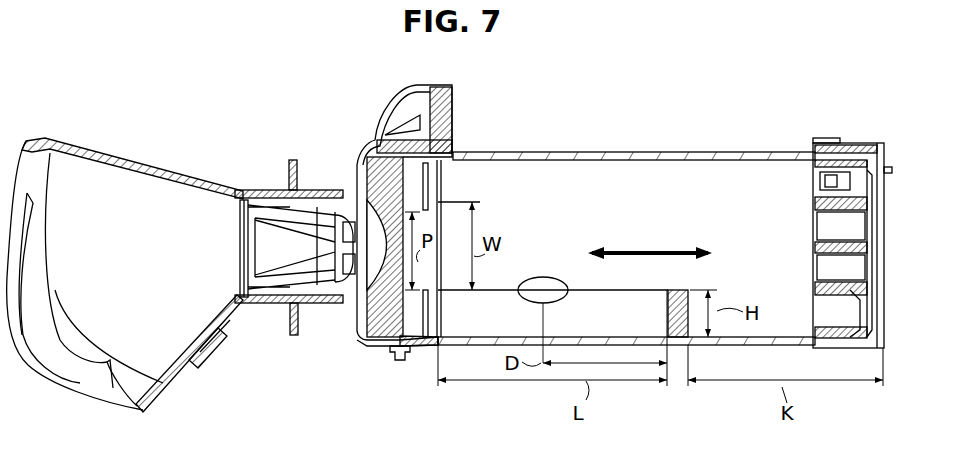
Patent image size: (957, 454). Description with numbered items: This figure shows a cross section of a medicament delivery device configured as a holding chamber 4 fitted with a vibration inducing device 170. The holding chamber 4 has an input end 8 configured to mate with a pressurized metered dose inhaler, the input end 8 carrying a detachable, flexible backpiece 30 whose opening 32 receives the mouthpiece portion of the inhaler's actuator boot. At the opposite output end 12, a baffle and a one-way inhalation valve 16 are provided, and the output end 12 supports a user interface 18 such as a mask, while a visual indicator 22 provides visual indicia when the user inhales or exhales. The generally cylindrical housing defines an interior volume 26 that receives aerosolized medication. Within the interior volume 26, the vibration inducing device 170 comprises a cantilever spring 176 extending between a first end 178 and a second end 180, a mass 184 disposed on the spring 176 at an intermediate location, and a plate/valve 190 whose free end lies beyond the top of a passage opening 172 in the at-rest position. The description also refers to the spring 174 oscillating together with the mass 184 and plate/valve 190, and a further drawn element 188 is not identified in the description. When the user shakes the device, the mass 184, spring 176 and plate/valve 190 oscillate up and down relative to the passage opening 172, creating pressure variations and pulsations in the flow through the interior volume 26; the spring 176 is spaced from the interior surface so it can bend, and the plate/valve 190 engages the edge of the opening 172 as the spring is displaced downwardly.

The holding chamber 4 is at (629, 110).
The input end 8 is at (896, 255).
The output end 12 is at (295, 348).
The one-way inhalation valve 16 is at (340, 243).
The user interface 18 is at (143, 158).
The visual indicator 22 is at (414, 87).
The interior volume 26 is at (724, 173).
The backpiece 30 is at (856, 140).
The opening 32 is at (835, 231).
The vibration inducing device 170 is at (580, 224).
The passage opening 172 is at (434, 225).
The spring 174 is at (655, 250).
The cantilever spring 176 is at (488, 292).
The first end 178 is at (670, 290).
The second end 180 is at (437, 341).
The mass 184 is at (540, 277).
The stop wall 188 is at (679, 346).
The plate/valve 190 is at (440, 237).